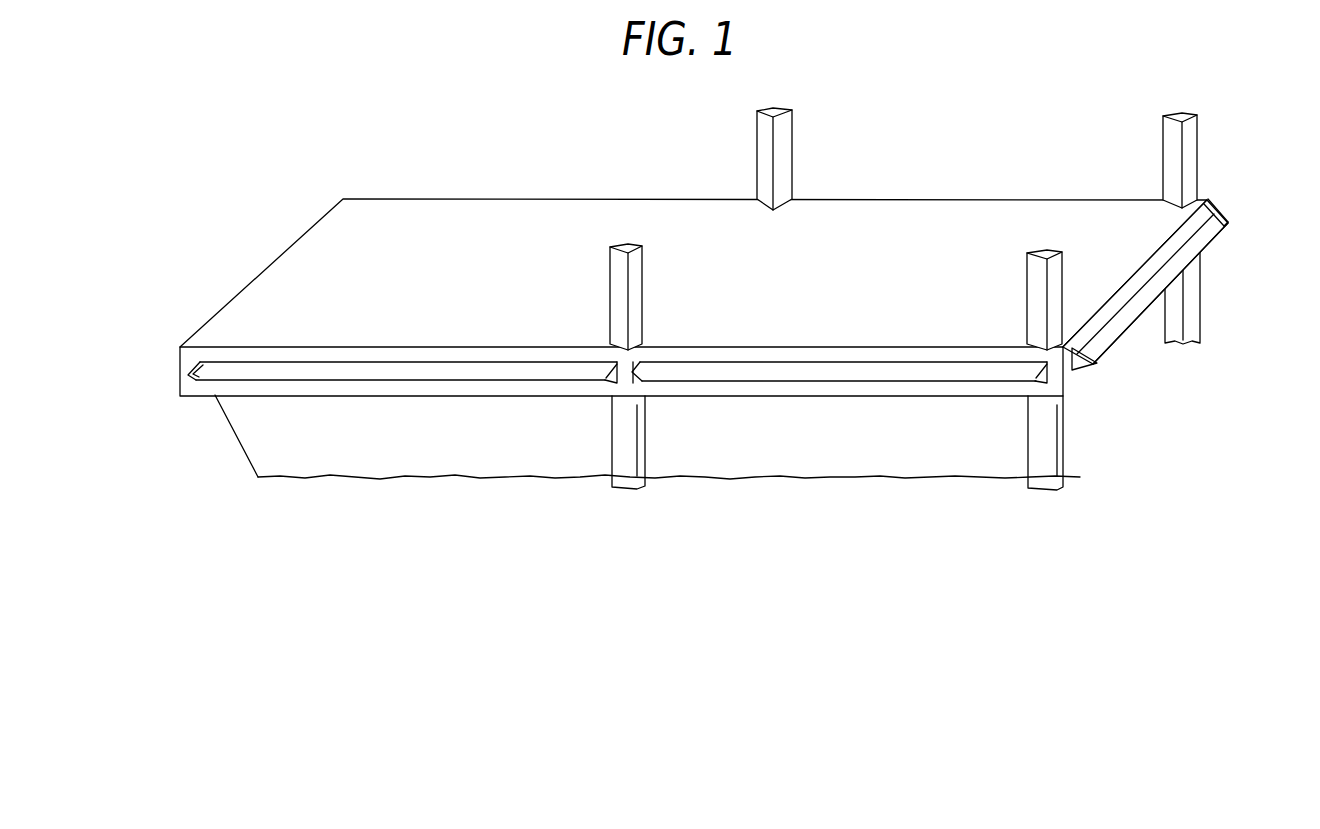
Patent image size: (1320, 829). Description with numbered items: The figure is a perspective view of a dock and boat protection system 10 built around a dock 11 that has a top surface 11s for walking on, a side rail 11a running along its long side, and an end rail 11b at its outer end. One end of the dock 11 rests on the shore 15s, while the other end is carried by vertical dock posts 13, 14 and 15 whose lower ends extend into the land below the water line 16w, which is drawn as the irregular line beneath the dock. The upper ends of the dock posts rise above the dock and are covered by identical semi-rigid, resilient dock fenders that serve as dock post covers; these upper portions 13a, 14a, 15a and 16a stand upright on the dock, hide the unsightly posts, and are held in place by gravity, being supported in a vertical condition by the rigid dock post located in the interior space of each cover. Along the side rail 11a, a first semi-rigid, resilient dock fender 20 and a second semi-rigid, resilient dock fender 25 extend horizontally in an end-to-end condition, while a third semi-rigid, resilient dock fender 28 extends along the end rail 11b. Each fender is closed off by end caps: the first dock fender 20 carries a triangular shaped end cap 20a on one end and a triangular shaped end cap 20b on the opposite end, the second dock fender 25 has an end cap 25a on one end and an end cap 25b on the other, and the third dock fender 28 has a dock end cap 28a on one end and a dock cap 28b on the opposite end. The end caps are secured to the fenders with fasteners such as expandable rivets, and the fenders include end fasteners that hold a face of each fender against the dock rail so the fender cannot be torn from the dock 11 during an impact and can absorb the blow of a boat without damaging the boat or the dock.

The dock and boat protection system 10 is at (832, 144).
The dock 11 is at (680, 258).
The side rail 11a is at (218, 355).
The end rail 11b is at (1157, 247).
The top surface 11s is at (408, 220).
The vertical dock post 13 is at (645, 435).
The first post upper portion 13a is at (633, 270).
The vertical dock post 14 is at (1028, 430).
The second post upper portion 14a is at (1027, 282).
The vertical dock post 15 is at (1176, 216).
The corner post upper portion 15a is at (1160, 143).
The shore 15s is at (233, 438).
The rear post upper portion 16a is at (763, 140).
The water line 16w is at (380, 477).
The first dock fender 20 is at (363, 367).
The end cap 20a is at (188, 374).
The end cap 20b is at (613, 363).
The second dock fender 25 is at (839, 332).
The end cap 25a is at (636, 368).
The end cap 25b is at (1047, 347).
The third dock fender 28 is at (1170, 294).
The dock end cap 28a is at (1082, 363).
The dock cap 28b is at (1227, 215).